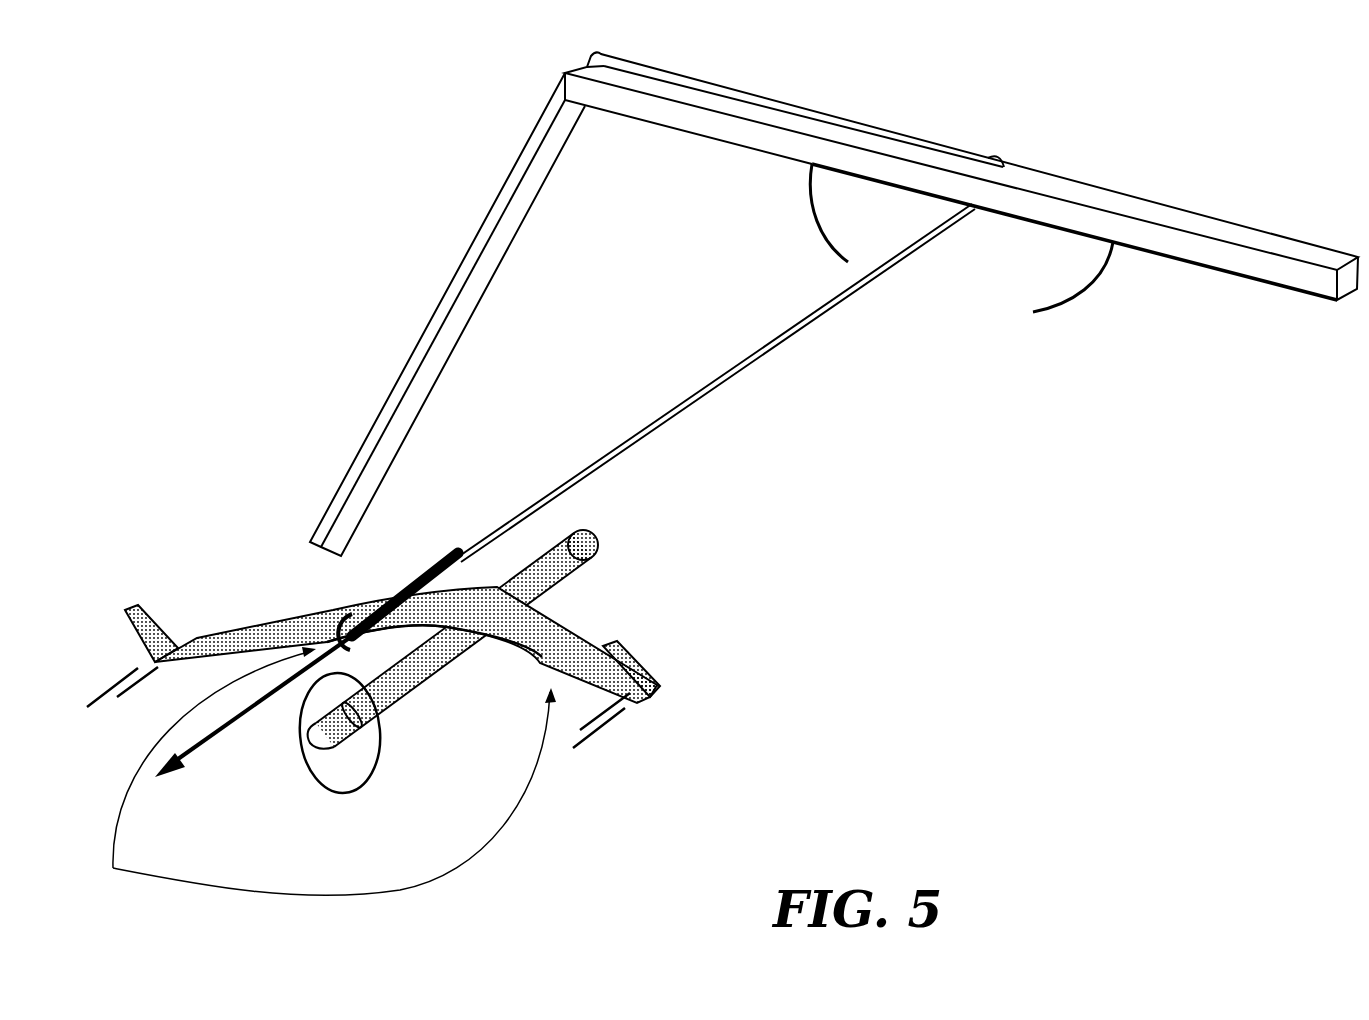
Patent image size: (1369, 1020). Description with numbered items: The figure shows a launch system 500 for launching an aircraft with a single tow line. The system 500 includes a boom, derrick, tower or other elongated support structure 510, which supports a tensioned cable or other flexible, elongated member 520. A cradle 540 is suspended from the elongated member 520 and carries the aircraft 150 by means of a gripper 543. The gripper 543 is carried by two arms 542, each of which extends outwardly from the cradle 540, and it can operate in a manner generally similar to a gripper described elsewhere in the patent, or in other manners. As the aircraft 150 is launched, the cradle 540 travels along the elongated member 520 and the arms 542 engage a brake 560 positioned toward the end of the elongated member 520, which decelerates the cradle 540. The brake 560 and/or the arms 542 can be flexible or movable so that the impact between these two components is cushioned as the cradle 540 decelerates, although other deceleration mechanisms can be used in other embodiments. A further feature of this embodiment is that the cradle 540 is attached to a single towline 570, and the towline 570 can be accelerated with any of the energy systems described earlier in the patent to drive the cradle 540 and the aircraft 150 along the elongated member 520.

The launch system 500 is at (279, 172).
The elongated support structure 510 is at (523, 163).
The elongated member 520 is at (722, 366).
The cradle 540 is at (452, 554).
The arms 542 is at (350, 606).
The gripper 543 is at (113, 868).
The brake 560 is at (1084, 291).
The towline 570 is at (748, 372).
The aircraft 150 is at (387, 702).